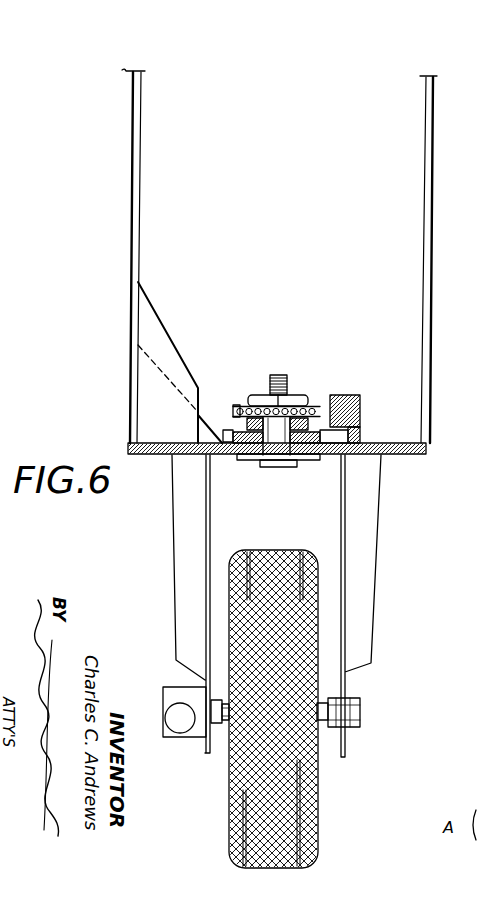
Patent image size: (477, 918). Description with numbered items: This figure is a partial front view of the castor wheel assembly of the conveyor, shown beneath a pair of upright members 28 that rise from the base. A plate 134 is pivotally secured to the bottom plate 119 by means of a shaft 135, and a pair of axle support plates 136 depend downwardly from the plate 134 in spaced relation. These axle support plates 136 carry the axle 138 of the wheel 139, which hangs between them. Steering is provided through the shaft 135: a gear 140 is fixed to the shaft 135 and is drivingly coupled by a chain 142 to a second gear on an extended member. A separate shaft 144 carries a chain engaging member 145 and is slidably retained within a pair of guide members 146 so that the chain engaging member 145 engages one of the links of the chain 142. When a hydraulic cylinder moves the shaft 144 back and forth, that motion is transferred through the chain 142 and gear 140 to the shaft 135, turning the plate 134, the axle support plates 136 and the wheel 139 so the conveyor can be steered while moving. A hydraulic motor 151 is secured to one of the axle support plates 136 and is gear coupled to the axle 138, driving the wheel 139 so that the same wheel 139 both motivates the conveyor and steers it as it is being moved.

The upright posts 28 is at (131, 372).
The bottom plate 119 is at (418, 437).
The plate 134 is at (418, 455).
The shaft 135 is at (270, 466).
The axle support plates 136 is at (206, 515).
The axle 138 is at (225, 720).
The wheel 139 is at (308, 797).
The gear 140 is at (243, 402).
The chain 142 is at (238, 406).
The shaft 144 is at (342, 395).
The chain engaging member 145 is at (318, 405).
The guide members 146 is at (354, 421).
The hydraulic motor 151 is at (173, 690).